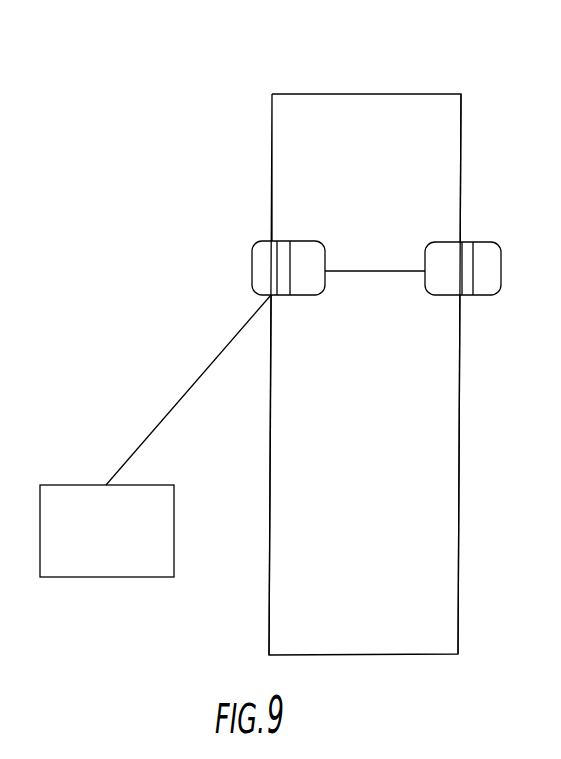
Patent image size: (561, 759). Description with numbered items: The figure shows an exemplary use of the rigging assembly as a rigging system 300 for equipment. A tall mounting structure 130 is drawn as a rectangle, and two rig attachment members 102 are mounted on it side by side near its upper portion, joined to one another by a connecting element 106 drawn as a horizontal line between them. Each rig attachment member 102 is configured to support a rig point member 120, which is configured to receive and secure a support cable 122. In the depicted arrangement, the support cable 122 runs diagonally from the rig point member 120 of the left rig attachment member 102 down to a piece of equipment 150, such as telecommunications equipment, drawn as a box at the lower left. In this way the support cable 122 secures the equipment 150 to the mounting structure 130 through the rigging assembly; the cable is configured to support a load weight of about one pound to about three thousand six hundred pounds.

The rigging system 300 is at (118, 148).
The mounting structure 130 is at (395, 120).
The rig attachment member 102 is at (305, 287).
The rig point member 120 is at (283, 258).
The connector link 106 is at (355, 273).
The support cable 122 is at (185, 390).
The equipment 150 is at (118, 565).